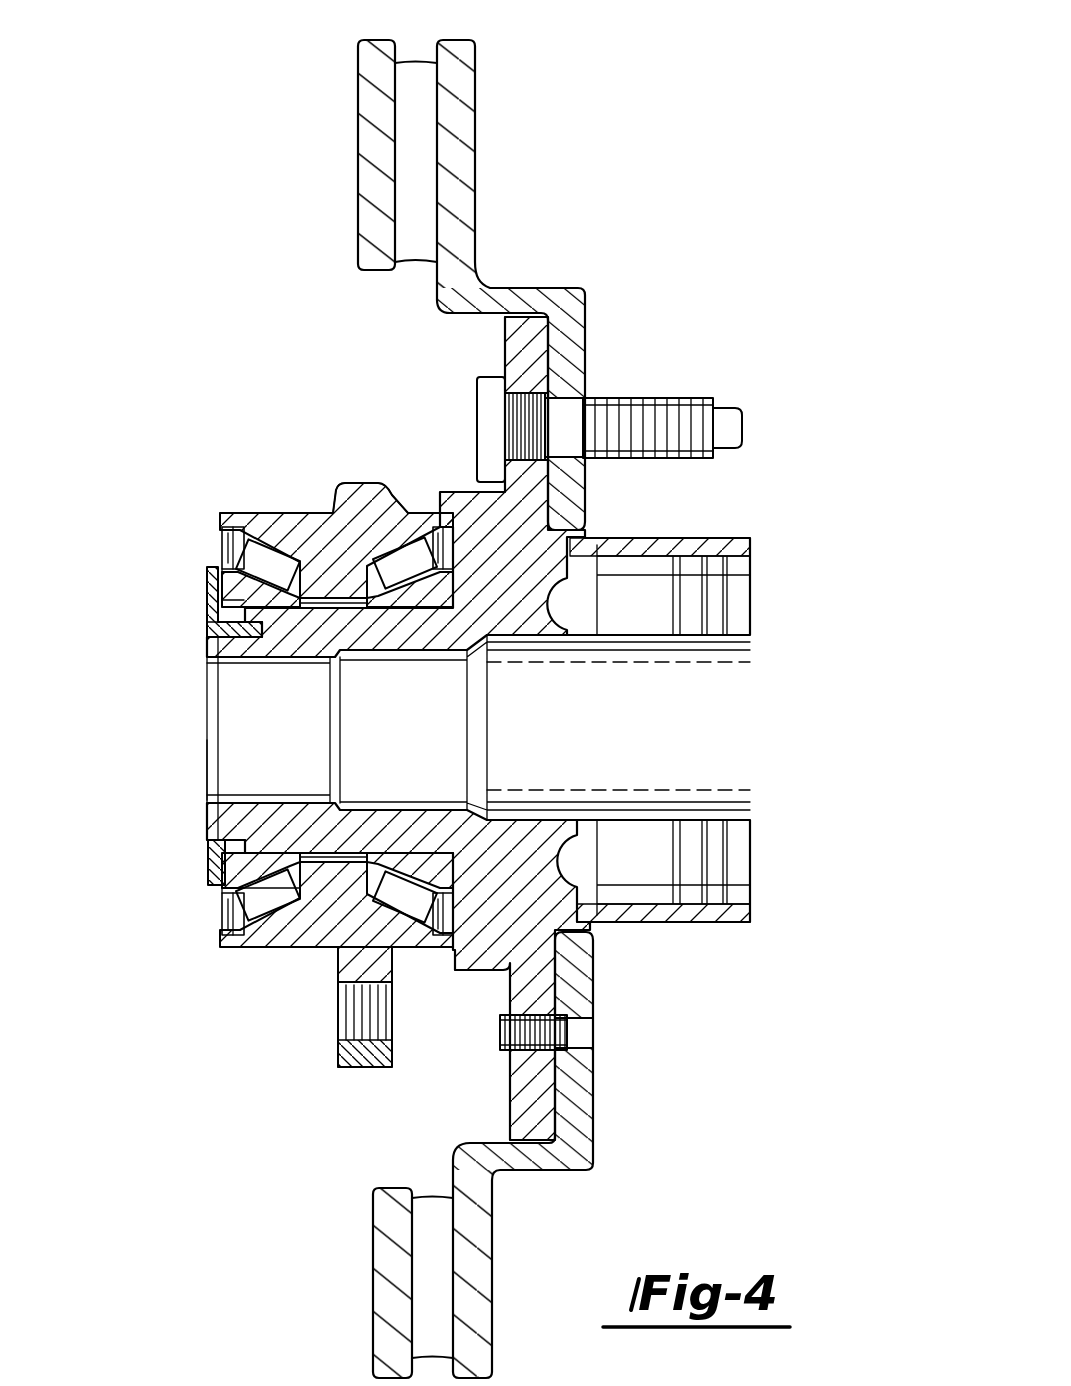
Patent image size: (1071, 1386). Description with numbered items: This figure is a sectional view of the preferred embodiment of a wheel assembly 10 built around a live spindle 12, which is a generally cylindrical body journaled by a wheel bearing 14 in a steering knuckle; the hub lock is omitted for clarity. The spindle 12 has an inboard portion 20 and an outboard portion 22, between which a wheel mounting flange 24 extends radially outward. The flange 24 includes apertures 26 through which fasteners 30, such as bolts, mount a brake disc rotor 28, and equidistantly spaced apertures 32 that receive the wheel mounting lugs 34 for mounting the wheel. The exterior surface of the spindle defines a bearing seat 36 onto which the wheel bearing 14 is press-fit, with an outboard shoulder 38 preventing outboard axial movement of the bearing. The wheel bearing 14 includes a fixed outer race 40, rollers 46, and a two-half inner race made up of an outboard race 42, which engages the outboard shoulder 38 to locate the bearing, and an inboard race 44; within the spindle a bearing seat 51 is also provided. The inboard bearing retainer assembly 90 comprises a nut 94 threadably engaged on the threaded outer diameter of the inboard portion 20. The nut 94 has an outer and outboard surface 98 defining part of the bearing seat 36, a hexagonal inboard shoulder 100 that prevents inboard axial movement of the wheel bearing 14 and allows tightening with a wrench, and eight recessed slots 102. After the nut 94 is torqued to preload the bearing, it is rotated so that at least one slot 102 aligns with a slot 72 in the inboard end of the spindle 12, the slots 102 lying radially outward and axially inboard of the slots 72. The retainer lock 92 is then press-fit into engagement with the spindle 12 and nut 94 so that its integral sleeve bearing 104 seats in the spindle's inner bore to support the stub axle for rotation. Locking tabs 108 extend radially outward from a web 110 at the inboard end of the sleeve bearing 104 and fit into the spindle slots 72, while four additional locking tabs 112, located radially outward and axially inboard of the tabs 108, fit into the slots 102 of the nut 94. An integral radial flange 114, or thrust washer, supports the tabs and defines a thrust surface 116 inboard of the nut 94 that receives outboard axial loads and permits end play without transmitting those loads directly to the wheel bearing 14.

The wheel assembly 10 is at (633, 275).
The live spindle 12 is at (470, 488).
The wheel bearing 14 is at (248, 490).
The inboard portion 20 is at (302, 835).
The outboard portion 22 is at (652, 545).
The wheel mounting flange 24 is at (525, 342).
The apertures 26 is at (503, 1038).
The brake disc rotor 28 is at (452, 195).
The fasteners 30 is at (585, 1036).
The apertures 32 is at (498, 395).
The wheel mounting lugs 34 is at (652, 400).
The bearing seat 36 is at (330, 545).
The outboard shoulder 38 is at (492, 880).
The outer race 40 is at (350, 985).
The outboard race 42 is at (350, 895).
The inboard race 44 is at (292, 895).
The rollers 46 is at (255, 920).
The bearing seat 51 is at (212, 795).
The slot 72 is at (238, 648).
The inboard bearing retainer assembly 90 is at (190, 592).
The retainer lock 92 is at (195, 745).
The nut 94 is at (198, 878).
The outer and outboard surface 98 is at (238, 885).
The inboard shoulder 100 is at (228, 540).
The slots 102 is at (225, 572).
The sleeve bearing 104 is at (250, 655).
The locking tabs 108 is at (228, 628).
The web 110 is at (218, 822).
The locking tabs 112 is at (212, 608).
The radial flange 114 is at (205, 862).
The thrust surface 116 is at (208, 762).